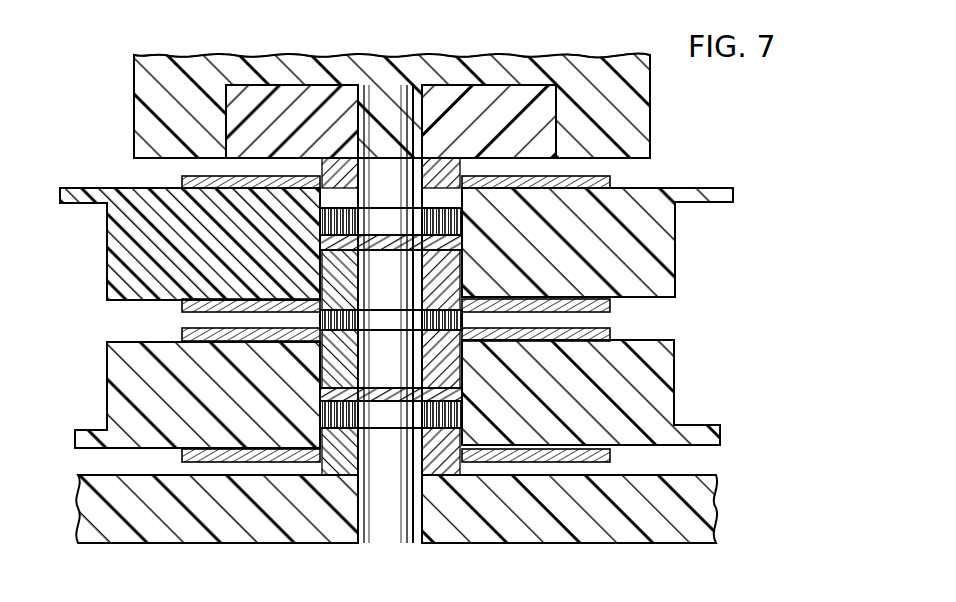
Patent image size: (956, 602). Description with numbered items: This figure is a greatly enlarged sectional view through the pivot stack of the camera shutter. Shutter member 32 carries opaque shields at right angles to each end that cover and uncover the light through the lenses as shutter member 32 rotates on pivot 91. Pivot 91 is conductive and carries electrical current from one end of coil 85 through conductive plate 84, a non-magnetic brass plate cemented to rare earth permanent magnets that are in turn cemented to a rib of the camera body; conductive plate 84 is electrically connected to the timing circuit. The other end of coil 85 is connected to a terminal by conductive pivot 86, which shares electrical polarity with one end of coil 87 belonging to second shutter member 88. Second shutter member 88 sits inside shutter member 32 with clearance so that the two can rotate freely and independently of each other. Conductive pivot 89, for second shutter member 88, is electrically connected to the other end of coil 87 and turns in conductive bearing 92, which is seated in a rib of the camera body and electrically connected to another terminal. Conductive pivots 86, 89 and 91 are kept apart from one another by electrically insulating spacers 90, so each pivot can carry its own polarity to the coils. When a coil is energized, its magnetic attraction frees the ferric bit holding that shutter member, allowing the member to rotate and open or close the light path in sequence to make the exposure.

The shutter member 32 is at (705, 432).
The conductive plate 84 is at (704, 503).
The coil 85 is at (615, 334).
The conductive pivot 86 is at (385, 336).
The coil 87 is at (612, 182).
The second shutter member 88 is at (710, 196).
The conductive pivot 89 is at (388, 88).
The electrically insulating spacers 90 is at (455, 240).
The pivot 91 is at (392, 527).
The conductive bearing 92 is at (291, 90).